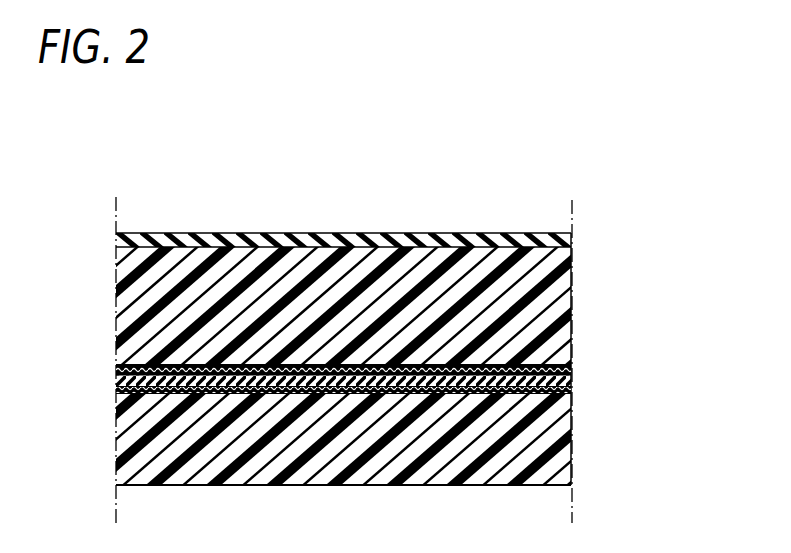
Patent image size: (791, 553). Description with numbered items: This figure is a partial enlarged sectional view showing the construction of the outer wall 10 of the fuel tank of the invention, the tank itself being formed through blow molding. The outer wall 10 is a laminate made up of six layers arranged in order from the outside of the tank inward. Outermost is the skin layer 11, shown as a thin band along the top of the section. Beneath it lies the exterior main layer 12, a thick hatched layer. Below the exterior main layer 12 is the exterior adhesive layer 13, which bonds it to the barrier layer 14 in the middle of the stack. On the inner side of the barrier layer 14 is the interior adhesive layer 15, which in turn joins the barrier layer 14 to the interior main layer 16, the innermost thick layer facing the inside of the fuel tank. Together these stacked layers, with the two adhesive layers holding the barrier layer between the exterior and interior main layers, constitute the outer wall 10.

The outer wall 10 is at (318, 326).
The skin layer 11 is at (398, 226).
The exterior main layer 12 is at (357, 305).
The exterior adhesive layer 13 is at (398, 349).
The barrier layer 14 is at (398, 386).
The interior adhesive layer 15 is at (398, 419).
The interior main layer 16 is at (356, 448).